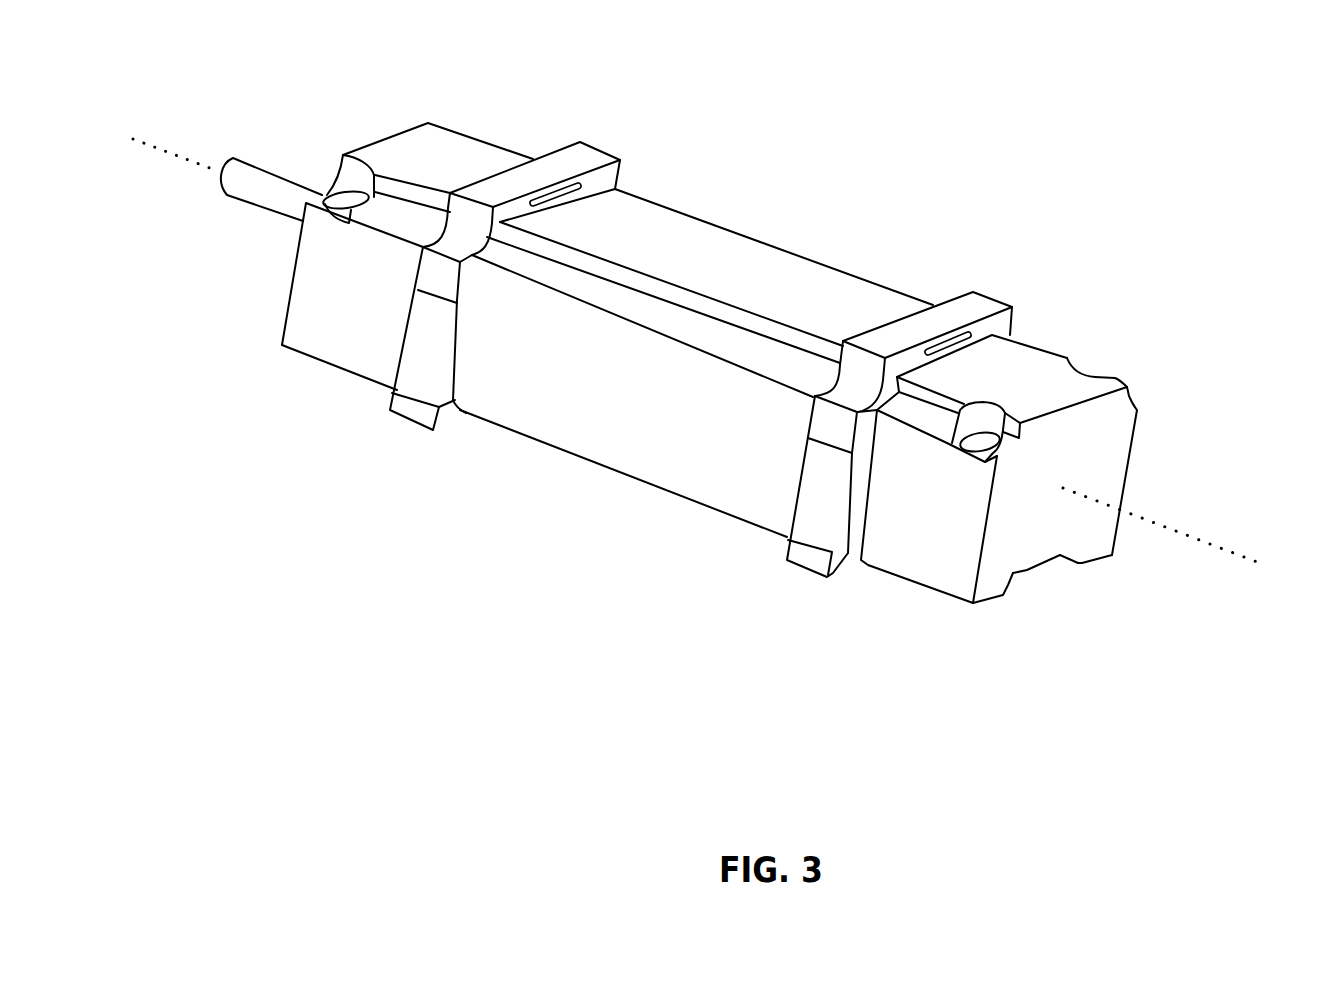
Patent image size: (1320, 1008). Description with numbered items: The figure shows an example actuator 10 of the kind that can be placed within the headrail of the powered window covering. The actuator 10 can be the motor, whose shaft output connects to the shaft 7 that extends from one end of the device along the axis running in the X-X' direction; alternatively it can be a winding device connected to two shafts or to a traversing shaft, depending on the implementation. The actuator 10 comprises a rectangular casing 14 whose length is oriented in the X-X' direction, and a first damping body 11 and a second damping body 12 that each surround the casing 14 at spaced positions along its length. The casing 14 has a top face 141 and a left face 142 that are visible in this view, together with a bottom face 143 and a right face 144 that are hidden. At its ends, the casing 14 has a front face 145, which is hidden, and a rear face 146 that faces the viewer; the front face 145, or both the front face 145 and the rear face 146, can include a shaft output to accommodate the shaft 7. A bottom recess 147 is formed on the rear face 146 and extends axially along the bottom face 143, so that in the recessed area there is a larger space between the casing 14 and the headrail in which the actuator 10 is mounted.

The actuator 10 is at (307, 411).
The shaft 7 is at (267, 197).
The first damping body 11 is at (584, 157).
The second damping body 12 is at (980, 305).
The rectangular casing 14 is at (1057, 430).
The top face 141 is at (768, 280).
The left face 142 is at (652, 440).
The bottom face 143 is at (718, 512).
The rear surface of housing 144 is at (722, 222).
The front face 145 is at (380, 132).
The rear face 146 is at (1088, 480).
The bottom recess 147 is at (1028, 568).